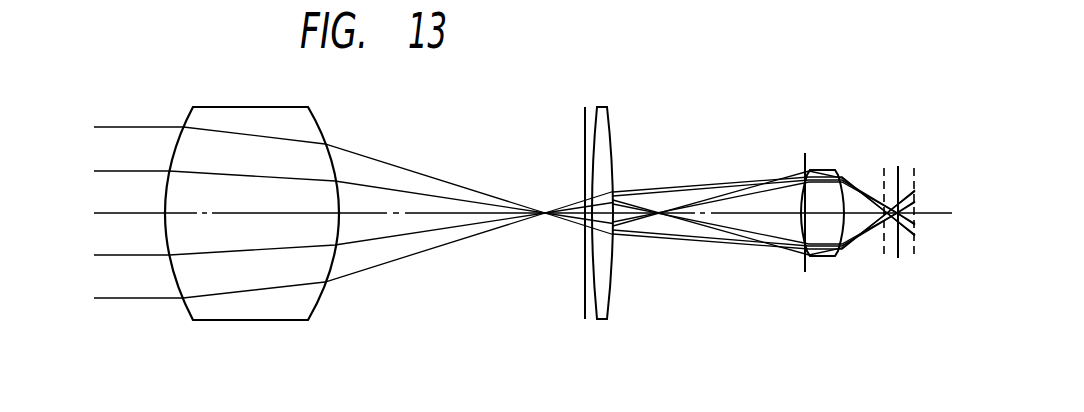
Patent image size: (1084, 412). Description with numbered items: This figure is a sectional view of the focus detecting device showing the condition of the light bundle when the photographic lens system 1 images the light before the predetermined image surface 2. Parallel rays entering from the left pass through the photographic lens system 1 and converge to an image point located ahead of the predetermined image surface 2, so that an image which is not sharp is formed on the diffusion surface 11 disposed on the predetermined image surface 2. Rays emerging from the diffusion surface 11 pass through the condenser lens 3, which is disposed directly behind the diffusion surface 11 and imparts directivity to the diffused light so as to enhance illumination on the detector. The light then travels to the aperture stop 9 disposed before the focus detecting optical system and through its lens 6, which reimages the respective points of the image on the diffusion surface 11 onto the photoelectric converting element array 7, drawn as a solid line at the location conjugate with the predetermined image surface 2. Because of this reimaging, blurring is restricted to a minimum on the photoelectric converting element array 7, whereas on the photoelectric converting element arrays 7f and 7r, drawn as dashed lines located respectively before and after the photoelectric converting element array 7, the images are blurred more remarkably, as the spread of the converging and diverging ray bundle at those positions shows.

The photographic lens system 1 is at (245, 106).
The diffusion surface 11 is at (583, 107).
The predetermined image surface 2 is at (535, 201).
The condenser lens 3 is at (609, 117).
The aperture stop 9 is at (805, 153).
The focus detecting optical system lens 6 is at (823, 169).
The photoelectric converting element array 7f is at (884, 168).
The photoelectric converting element array 7 is at (898, 167).
The photoelectric converting element array 7r is at (914, 168).